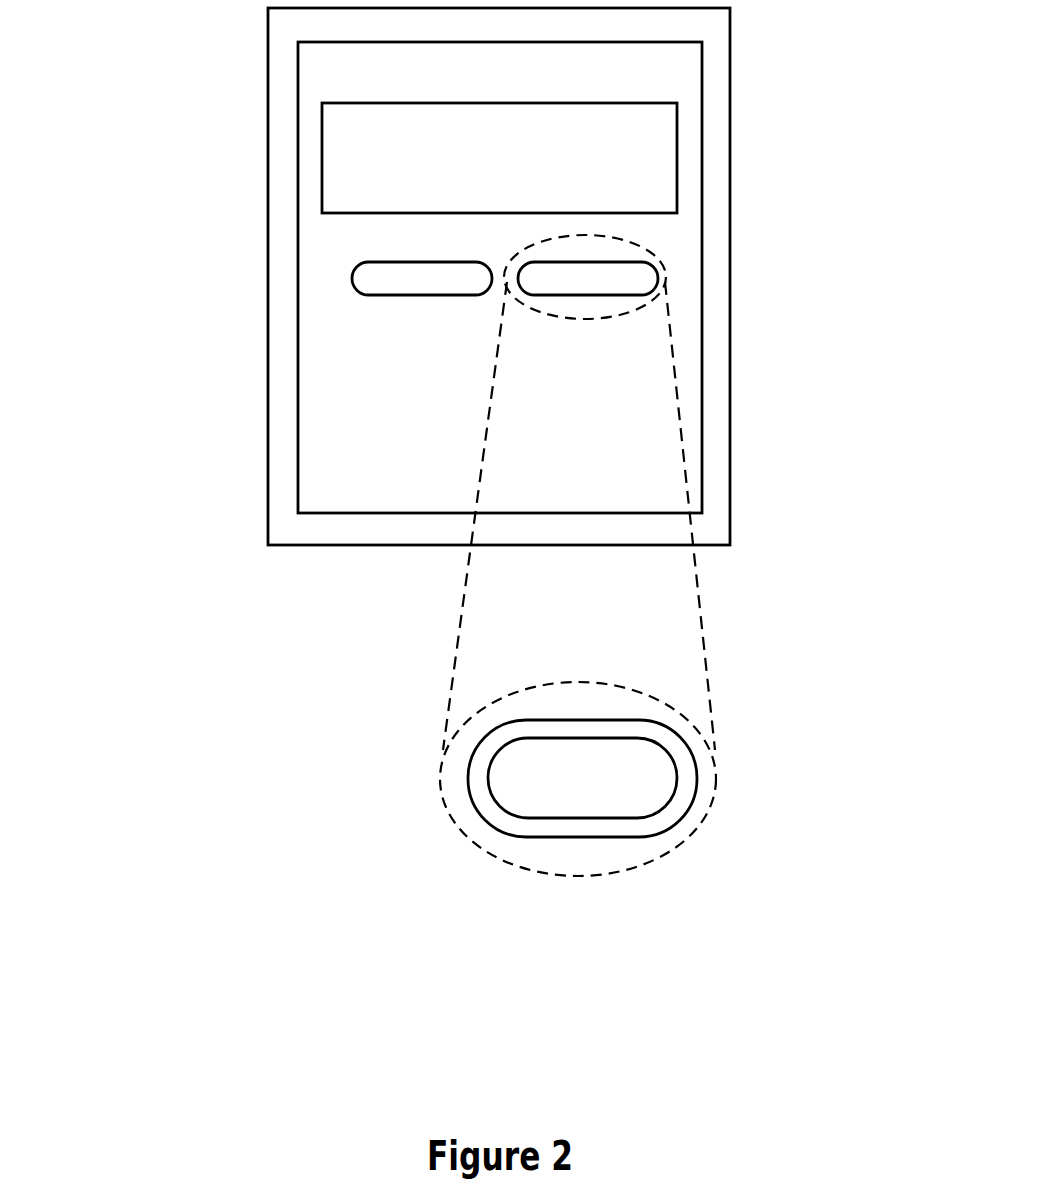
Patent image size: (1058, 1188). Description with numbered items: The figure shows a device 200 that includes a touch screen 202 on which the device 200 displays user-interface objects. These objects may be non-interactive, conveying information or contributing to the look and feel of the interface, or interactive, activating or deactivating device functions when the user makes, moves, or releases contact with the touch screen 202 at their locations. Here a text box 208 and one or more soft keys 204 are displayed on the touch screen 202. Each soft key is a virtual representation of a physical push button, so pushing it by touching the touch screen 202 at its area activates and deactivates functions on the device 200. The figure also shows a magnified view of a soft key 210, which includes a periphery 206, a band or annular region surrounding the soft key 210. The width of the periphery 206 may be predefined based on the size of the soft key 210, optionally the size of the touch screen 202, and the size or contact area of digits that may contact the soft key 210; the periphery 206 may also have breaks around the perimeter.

The device 200 is at (130, 144).
The touch screen 202 is at (545, 75).
The soft keys 204 is at (685, 327).
The periphery 206 is at (677, 813).
The text box 208 is at (585, 103).
The soft key 210 is at (507, 763).